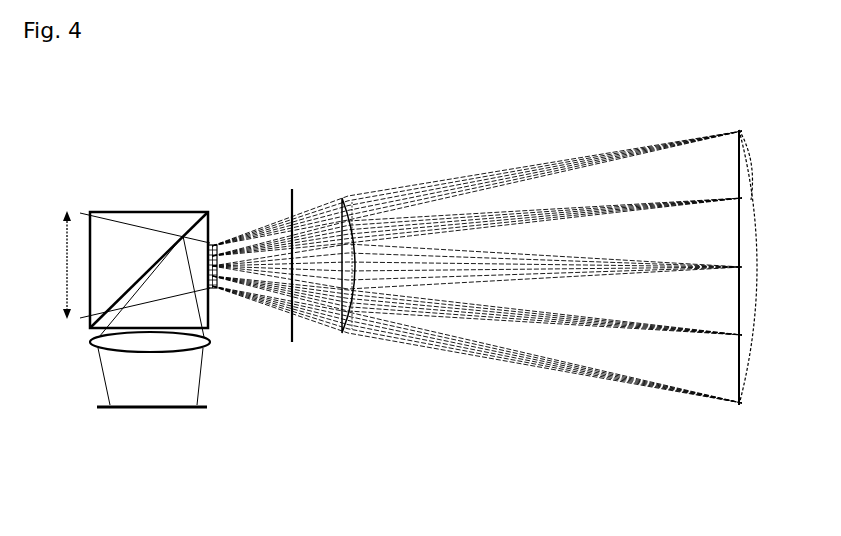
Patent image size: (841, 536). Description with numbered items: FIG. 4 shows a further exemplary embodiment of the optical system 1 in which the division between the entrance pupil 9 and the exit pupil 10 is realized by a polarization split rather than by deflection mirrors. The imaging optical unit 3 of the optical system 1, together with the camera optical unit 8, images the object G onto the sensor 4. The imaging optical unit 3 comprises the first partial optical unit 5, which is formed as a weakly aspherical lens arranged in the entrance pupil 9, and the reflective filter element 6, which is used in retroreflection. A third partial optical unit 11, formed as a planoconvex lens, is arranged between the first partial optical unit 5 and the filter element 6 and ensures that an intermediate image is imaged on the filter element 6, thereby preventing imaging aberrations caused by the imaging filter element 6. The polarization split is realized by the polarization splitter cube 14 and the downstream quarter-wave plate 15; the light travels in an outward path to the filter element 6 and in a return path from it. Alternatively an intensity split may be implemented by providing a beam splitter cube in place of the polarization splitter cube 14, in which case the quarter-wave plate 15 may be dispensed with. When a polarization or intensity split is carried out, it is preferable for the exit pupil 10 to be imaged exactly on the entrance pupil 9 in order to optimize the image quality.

The optical system 1 is at (756, 292).
The imaging optical unit 3 is at (758, 247).
The reflective filter element 6 is at (750, 168).
The sensor 4 is at (163, 408).
The camera optical unit 8 is at (178, 352).
The polarization splitter cube 14 is at (127, 210).
The entrance pupil 9 is at (217, 242).
The exit pupil 10 is at (223, 273).
The first partial optical unit 5 is at (218, 261).
The quarter-wave plate 15 is at (292, 190).
The third partial optical unit 11 is at (343, 199).
The object G is at (67, 255).